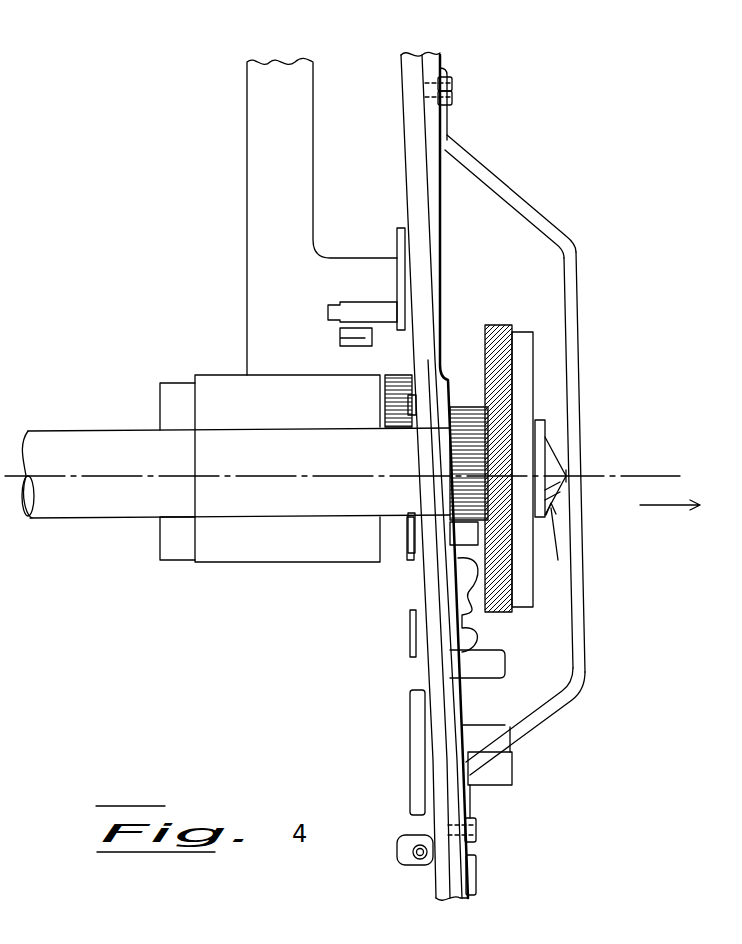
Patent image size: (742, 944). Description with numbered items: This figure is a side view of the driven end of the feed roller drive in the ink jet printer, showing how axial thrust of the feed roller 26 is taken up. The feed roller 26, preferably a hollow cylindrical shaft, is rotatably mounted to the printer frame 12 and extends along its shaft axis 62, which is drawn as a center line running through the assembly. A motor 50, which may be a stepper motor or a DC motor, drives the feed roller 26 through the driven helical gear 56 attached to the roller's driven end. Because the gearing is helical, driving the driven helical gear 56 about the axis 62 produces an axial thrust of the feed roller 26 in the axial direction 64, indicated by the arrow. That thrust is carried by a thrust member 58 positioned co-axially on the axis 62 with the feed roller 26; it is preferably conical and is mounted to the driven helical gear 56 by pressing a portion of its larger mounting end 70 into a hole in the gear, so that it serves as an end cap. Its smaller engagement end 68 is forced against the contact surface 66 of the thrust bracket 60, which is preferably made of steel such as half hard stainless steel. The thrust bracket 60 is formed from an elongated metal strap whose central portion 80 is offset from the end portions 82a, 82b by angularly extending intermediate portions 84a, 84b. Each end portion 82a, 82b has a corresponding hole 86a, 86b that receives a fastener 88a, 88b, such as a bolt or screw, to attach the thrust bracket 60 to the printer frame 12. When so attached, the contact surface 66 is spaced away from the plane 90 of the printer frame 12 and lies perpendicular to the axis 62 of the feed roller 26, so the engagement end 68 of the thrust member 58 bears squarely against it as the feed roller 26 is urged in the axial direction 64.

The printer frame 12 is at (402, 112).
The feed roller 26 is at (65, 520).
The motor 50 is at (200, 376).
The driven helical gear 56 is at (497, 323).
The thrust member 58 is at (575, 603).
The thrust bracket 60 is at (585, 652).
The shaft axis 62 is at (95, 478).
The axial direction 64 is at (670, 542).
The contact surface 66 is at (553, 493).
The engagement end 68 is at (562, 448).
The mounting end 70 is at (552, 452).
The central portion 80 is at (580, 452).
The end portion 82a is at (448, 137).
The end portion 82b is at (470, 812).
The intermediate portion 84a is at (513, 193).
The intermediate portion 84b is at (548, 728).
The hole 86a is at (443, 68).
The hole 86b is at (473, 870).
The fastener 88a is at (455, 96).
The fastener 88b is at (478, 832).
The plane 90 is at (422, 175).